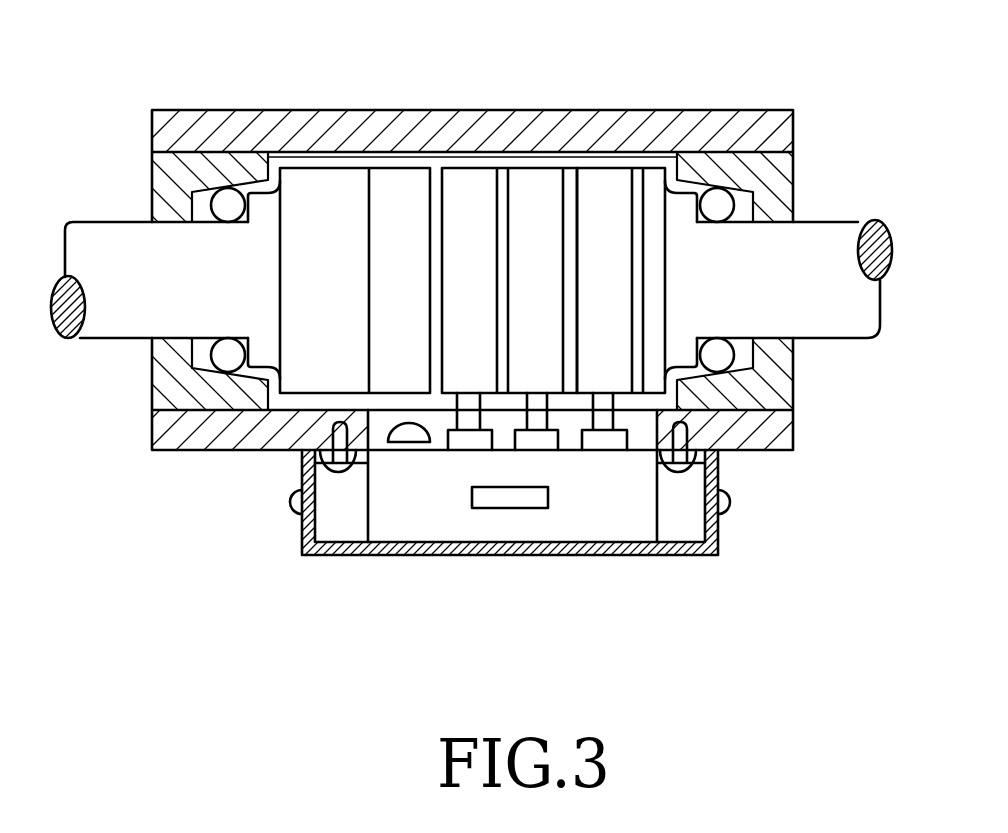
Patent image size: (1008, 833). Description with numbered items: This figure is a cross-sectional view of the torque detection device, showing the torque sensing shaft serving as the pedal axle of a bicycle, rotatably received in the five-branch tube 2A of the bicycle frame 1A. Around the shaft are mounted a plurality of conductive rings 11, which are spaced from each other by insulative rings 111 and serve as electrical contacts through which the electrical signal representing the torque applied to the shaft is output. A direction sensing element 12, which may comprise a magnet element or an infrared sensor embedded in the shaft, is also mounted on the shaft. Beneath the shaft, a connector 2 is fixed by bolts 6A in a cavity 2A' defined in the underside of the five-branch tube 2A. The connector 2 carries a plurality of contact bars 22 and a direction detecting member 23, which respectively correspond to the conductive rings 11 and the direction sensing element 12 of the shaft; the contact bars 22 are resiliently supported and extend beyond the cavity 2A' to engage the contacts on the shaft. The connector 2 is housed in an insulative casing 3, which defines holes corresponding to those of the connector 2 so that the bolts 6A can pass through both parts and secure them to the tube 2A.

The frame 1A is at (838, 252).
The five-branch tube 2A is at (504, 300).
The cavity 2A' is at (486, 533).
The connector 2 is at (650, 508).
The insulative casing 3 is at (300, 530).
The bolts 6A is at (333, 470).
The conductive rings 11 is at (537, 190).
The insulative rings 111 is at (640, 190).
The direction sensing element 12 is at (405, 200).
The contact bars 22 is at (472, 413).
The direction detecting member 23 is at (413, 445).